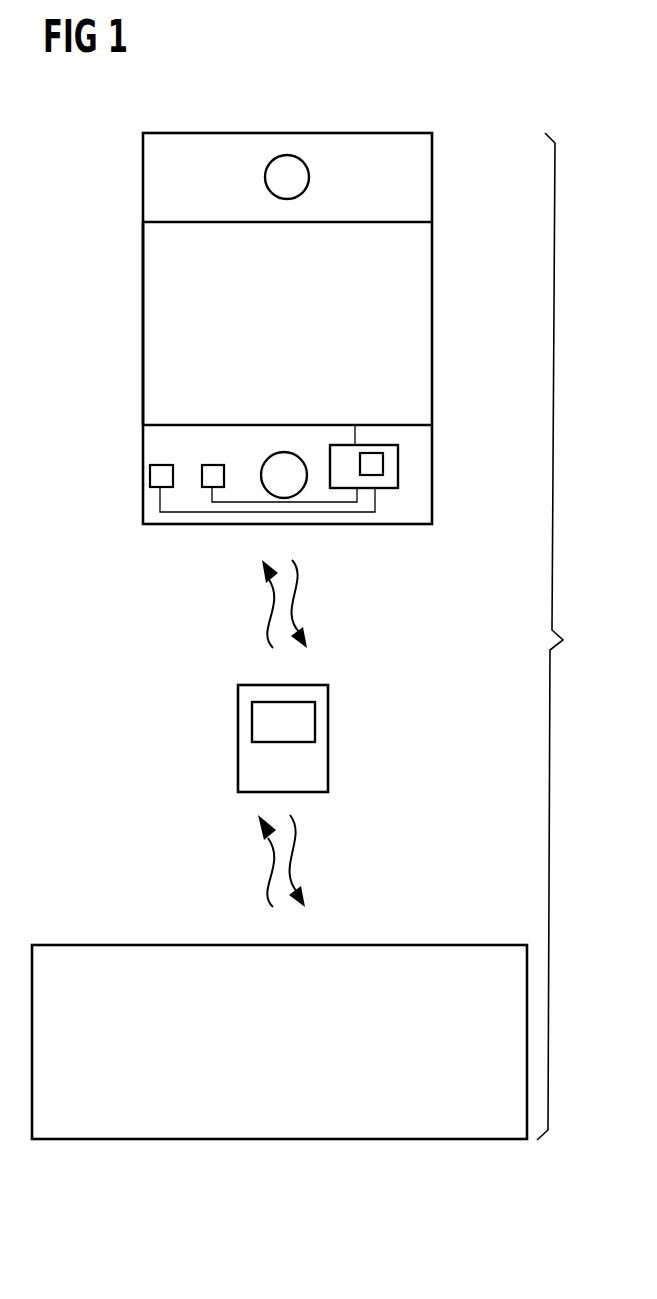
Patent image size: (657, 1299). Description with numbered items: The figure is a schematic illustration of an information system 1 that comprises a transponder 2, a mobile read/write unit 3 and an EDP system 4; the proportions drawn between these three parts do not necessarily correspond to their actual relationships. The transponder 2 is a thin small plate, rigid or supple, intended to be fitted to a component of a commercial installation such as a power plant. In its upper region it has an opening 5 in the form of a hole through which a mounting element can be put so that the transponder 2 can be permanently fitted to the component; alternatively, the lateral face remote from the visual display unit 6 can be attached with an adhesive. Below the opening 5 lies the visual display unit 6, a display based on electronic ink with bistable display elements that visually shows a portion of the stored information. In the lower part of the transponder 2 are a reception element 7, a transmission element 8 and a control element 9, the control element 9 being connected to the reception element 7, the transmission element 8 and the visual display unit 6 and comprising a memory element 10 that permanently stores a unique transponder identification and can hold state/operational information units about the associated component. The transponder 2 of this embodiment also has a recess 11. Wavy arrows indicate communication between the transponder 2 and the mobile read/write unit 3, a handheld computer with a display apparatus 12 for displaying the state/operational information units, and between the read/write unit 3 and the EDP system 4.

The information system 1 is at (559, 636).
The transponder 2 is at (408, 100).
The mobile read/write unit 3 is at (366, 741).
The EDP system 4 is at (437, 905).
The opening 5 is at (287, 155).
The visual display unit 6 is at (146, 335).
The reception element 7 is at (160, 465).
The transmission element 8 is at (212, 465).
The control element 9 is at (398, 467).
The memory element 10 is at (372, 453).
The recess 11 is at (284, 452).
The display apparatus 12 is at (252, 720).